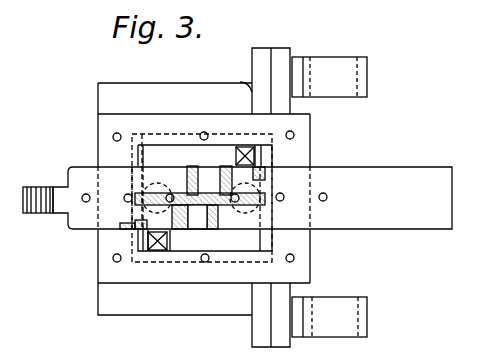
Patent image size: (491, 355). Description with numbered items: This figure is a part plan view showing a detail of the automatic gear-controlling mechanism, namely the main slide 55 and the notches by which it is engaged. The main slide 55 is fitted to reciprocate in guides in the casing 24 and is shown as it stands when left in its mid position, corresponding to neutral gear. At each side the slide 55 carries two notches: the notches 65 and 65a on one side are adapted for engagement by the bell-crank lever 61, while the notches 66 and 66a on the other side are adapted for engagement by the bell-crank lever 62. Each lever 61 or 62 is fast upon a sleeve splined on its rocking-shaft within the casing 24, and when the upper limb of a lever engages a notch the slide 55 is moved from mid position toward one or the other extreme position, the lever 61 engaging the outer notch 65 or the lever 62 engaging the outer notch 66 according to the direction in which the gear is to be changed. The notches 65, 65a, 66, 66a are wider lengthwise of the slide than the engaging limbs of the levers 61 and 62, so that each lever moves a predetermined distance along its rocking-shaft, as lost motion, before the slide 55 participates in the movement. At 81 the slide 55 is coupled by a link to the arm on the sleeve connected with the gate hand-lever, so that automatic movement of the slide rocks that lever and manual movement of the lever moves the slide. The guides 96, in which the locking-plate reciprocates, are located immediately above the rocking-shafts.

The casing 24 is at (168, 313).
The main slide 55 is at (413, 172).
The bell-crank lever 61 is at (133, 243).
The bell-crank lever 62 is at (238, 156).
The outer notch 65 is at (182, 230).
The notch 65a is at (219, 230).
The outer notch 66 is at (227, 177).
The notch 66a is at (182, 175).
The coupling point 81 is at (37, 187).
The guides 96 is at (367, 77).